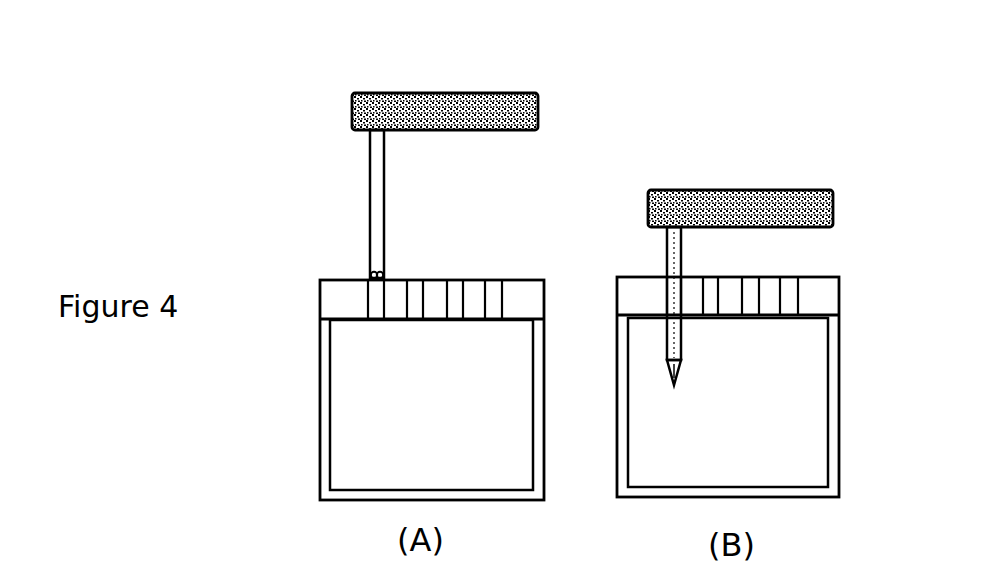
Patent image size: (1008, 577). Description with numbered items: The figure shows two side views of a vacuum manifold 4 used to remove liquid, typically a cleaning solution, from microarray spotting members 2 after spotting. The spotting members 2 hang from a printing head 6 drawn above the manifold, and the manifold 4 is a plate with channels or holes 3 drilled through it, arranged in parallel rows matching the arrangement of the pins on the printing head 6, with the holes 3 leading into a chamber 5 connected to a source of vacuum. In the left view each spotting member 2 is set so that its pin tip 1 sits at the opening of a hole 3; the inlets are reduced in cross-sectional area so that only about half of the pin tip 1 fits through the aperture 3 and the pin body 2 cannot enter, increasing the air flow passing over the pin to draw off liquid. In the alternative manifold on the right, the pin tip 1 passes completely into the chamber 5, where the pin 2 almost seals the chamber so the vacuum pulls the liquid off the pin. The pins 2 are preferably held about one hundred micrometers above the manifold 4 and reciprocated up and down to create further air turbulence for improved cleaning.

The pin tip 1 is at (362, 270).
The spotting member 2 is at (393, 194).
The channel or hole 3 is at (377, 310).
The vacuum manifold 4 is at (312, 403).
The chamber 5 is at (418, 350).
The support bar 6 is at (483, 90).